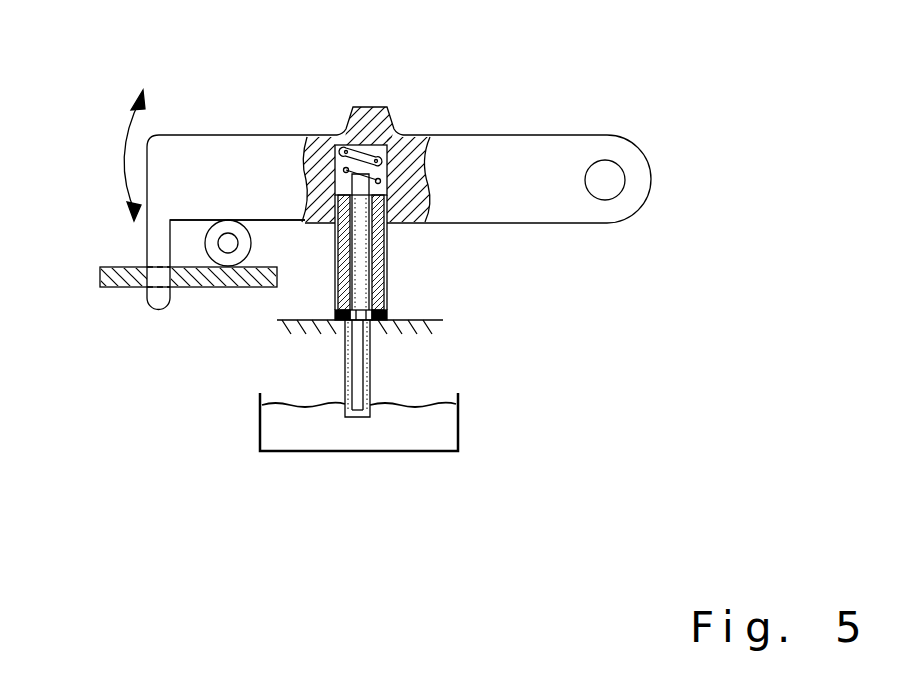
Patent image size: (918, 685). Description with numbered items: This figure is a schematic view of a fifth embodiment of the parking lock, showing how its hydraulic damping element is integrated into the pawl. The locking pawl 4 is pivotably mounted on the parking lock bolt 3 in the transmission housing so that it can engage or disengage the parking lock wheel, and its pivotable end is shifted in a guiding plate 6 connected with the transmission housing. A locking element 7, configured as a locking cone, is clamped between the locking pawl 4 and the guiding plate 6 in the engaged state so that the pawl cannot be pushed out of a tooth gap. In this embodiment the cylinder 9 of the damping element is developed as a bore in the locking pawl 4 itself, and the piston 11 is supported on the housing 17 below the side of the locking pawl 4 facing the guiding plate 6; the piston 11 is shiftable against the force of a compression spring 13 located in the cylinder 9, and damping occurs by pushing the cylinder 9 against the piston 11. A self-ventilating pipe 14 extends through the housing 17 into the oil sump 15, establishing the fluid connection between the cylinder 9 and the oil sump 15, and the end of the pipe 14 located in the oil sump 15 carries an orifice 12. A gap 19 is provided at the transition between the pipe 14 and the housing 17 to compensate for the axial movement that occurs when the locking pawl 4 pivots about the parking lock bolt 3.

The parking lock bolt 3 is at (605, 180).
The locking pawl 4 is at (570, 177).
The guiding plate 6 is at (107, 265).
The locking element 7 is at (228, 226).
The cylinder 9 is at (432, 150).
The piston 11 is at (270, 394).
The orifice 12 is at (586, 260).
The compression spring 13 is at (333, 114).
The pipe 14 is at (432, 492).
The oil sump 15 is at (359, 493).
The housing 17 is at (557, 345).
The gap 19 is at (313, 456).